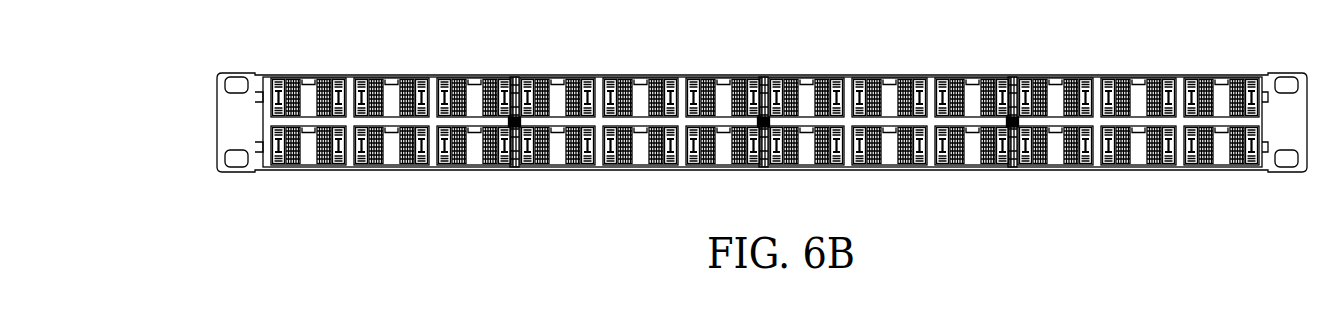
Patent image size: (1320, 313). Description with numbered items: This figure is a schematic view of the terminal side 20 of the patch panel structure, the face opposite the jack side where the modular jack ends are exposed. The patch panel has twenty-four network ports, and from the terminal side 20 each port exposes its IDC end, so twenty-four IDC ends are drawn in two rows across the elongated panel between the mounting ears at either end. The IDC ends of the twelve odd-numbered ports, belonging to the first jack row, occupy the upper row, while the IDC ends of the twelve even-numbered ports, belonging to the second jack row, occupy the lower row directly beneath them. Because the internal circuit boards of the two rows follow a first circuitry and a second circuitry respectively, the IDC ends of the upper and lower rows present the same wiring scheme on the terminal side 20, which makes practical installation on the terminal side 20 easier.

The terminal side 20 is at (258, 49).